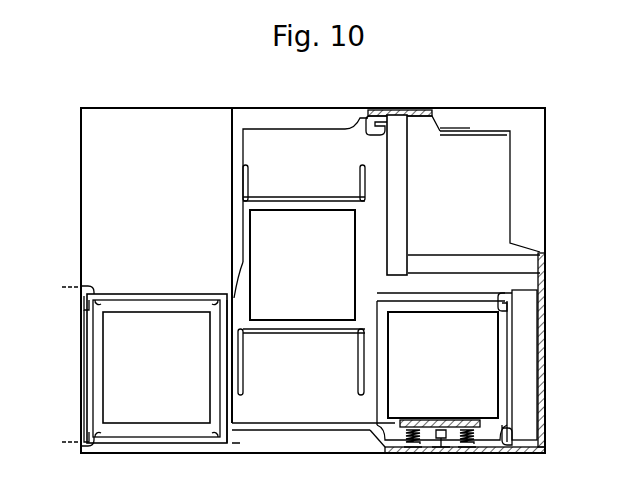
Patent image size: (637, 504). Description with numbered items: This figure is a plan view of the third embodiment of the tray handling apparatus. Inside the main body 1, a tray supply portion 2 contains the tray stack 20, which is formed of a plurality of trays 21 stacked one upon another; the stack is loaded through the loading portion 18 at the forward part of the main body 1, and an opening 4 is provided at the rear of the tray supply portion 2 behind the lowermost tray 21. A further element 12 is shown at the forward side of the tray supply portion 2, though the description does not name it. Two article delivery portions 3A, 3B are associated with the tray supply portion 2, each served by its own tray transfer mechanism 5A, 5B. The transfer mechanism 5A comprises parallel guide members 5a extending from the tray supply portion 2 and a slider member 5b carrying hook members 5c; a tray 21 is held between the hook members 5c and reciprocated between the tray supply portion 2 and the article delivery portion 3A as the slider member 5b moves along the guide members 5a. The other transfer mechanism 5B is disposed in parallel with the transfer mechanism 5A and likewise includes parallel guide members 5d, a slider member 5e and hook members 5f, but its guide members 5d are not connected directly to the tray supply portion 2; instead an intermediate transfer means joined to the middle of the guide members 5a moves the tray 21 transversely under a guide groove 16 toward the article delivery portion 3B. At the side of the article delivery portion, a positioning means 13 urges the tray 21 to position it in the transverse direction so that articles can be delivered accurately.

The main body 1 is at (548, 154).
The tray supply portion 2 is at (118, 358).
The article delivery portion 3A is at (470, 362).
The article delivery portion 3B is at (495, 194).
The opening 4 is at (230, 407).
The parallel guide members 5a is at (302, 430).
The tray transfer mechanism 5A is at (520, 386).
The slider member 5b is at (527, 324).
The tray transfer mechanism 5B is at (440, 135).
The hook members 5c is at (507, 441).
The parallel guide members 5d is at (418, 128).
The slider member 5e is at (398, 226).
The hook members 5f is at (376, 126).
The bracket 12 is at (80, 306).
The positioning means 13 is at (462, 433).
The guide groove 16 is at (359, 180).
The loading portion 18 is at (86, 393).
The tray stack 20 is at (157, 428).
The tray 21 is at (312, 311).